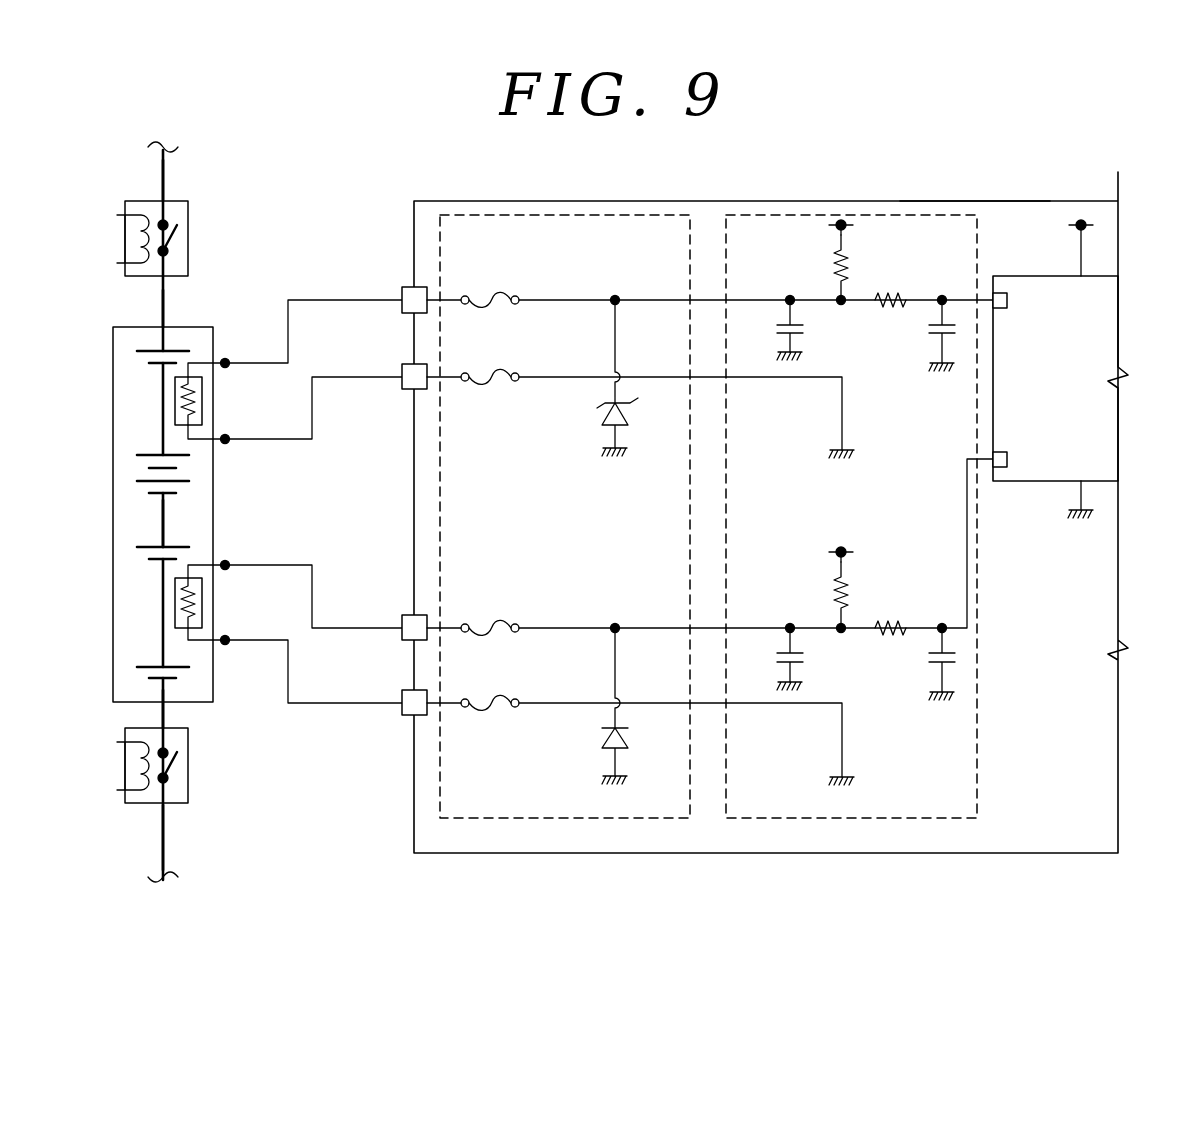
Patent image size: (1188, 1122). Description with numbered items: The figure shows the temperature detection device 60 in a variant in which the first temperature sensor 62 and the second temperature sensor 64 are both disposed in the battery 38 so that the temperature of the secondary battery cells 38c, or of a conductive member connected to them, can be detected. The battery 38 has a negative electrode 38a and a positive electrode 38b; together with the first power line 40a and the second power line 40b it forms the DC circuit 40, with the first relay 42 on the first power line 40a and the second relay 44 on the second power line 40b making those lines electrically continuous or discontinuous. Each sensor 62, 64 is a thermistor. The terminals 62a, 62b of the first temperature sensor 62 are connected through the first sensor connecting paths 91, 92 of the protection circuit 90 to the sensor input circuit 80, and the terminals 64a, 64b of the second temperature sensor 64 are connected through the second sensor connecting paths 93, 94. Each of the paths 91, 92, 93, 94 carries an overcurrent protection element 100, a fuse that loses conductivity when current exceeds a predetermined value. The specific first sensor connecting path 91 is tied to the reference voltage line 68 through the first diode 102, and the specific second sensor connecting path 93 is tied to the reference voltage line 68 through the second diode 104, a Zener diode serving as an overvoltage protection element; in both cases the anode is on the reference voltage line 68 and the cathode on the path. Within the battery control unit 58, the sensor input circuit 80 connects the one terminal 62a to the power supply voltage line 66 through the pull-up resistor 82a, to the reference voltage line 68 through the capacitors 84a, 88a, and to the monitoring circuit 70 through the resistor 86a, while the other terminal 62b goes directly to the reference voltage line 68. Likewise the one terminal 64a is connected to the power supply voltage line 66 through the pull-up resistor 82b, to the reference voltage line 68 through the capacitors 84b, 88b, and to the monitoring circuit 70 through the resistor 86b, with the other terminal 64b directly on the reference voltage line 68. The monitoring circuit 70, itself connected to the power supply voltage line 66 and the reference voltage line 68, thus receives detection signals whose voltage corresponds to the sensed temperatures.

The battery 38 is at (113, 457).
The negative electrode 38a is at (163, 708).
The positive electrode 38b is at (163, 314).
The secondary battery cells 38c is at (152, 547).
The DC circuit 40 is at (188, 192).
The first power line 40a is at (163, 840).
The second power line 40b is at (163, 182).
The first relay 42 is at (125, 236).
The second relay 44 is at (125, 764).
The battery control unit 58 is at (973, 201).
The temperature detection device 60 is at (384, 212).
The first temperature sensor 62 is at (202, 598).
The one terminal of the first temperature sensor 62a is at (225, 565).
The other terminal of the first temperature sensor 62b is at (225, 640).
The second temperature sensor 64 is at (202, 400).
The one terminal of the second temperature sensor 64a is at (225, 360).
The other terminal of the second temperature sensor 64b is at (225, 439).
The power supply voltage line 66 is at (841, 225).
The reference voltage line 68 is at (603, 447).
The monitoring circuit 70 is at (1110, 293).
The sensor input circuit 80 is at (767, 215).
The pull-up resistor 82a is at (847, 580).
The pull-up resistor 82b is at (847, 252).
The capacitor 84a is at (935, 663).
The capacitor 84b is at (935, 337).
The resistor 86a is at (883, 635).
The resistor 86b is at (883, 308).
The capacitor 88a is at (782, 652).
The capacitor 88b is at (782, 325).
The protection circuit 90 is at (452, 213).
The specific first sensor connecting path 91 is at (542, 623).
The first sensor connecting path 92 is at (540, 703).
The specific second sensor connecting path 93 is at (542, 297).
The second sensor connecting path 94 is at (540, 377).
The overcurrent protection element 100 is at (495, 295).
The first diode 102 is at (600, 733).
The second diode 104 is at (600, 410).